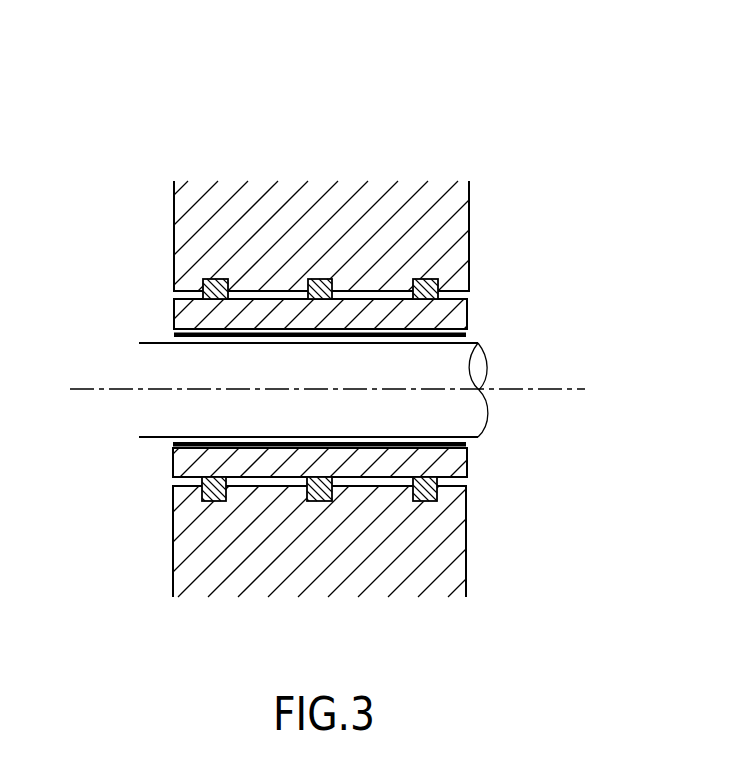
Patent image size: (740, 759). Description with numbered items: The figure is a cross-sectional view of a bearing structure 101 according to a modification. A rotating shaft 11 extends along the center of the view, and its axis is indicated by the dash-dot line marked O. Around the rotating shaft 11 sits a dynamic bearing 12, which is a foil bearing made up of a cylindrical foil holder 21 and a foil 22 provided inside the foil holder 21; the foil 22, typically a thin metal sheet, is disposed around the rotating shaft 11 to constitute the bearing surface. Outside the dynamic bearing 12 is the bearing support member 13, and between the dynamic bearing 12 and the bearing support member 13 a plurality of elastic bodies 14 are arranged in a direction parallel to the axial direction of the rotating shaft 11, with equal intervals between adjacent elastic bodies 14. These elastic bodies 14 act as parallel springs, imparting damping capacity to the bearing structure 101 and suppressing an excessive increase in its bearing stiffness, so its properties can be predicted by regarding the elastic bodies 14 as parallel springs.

The bearing structure 101 is at (466, 97).
The rotating shaft 11 is at (374, 412).
The dynamic bearing 12 is at (573, 303).
The bearing support member 13 is at (447, 237).
The elastic body 14 is at (217, 279).
The foil holder 21 is at (441, 322).
The foil 22 is at (420, 338).
The rotation axis O is at (110, 387).